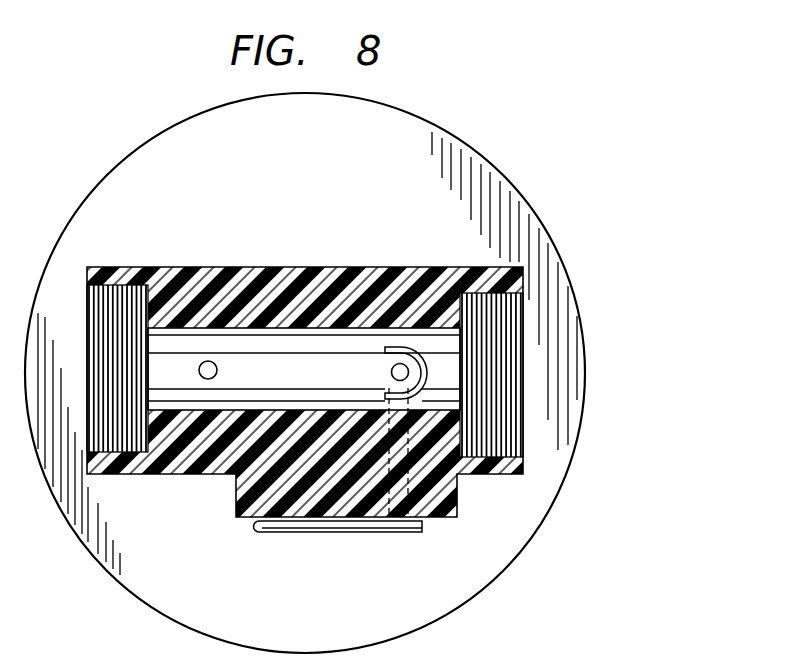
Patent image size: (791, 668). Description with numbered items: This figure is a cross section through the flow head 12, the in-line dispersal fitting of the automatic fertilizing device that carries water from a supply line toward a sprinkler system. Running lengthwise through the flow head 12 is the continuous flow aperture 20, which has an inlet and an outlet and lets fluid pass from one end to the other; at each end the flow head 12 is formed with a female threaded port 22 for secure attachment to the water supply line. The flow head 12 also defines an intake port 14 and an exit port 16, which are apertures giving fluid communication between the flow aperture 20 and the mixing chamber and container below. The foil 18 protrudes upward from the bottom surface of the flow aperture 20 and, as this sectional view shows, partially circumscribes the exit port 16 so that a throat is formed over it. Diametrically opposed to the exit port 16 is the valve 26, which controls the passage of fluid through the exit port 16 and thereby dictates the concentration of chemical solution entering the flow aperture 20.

The flow head 12 is at (527, 198).
The intake port 14 is at (208, 360).
The exit port 16 is at (391, 370).
The foil 18 is at (415, 347).
The flow aperture 20 is at (540, 372).
The female threaded port 22 is at (517, 272).
The valve 26 is at (427, 500).